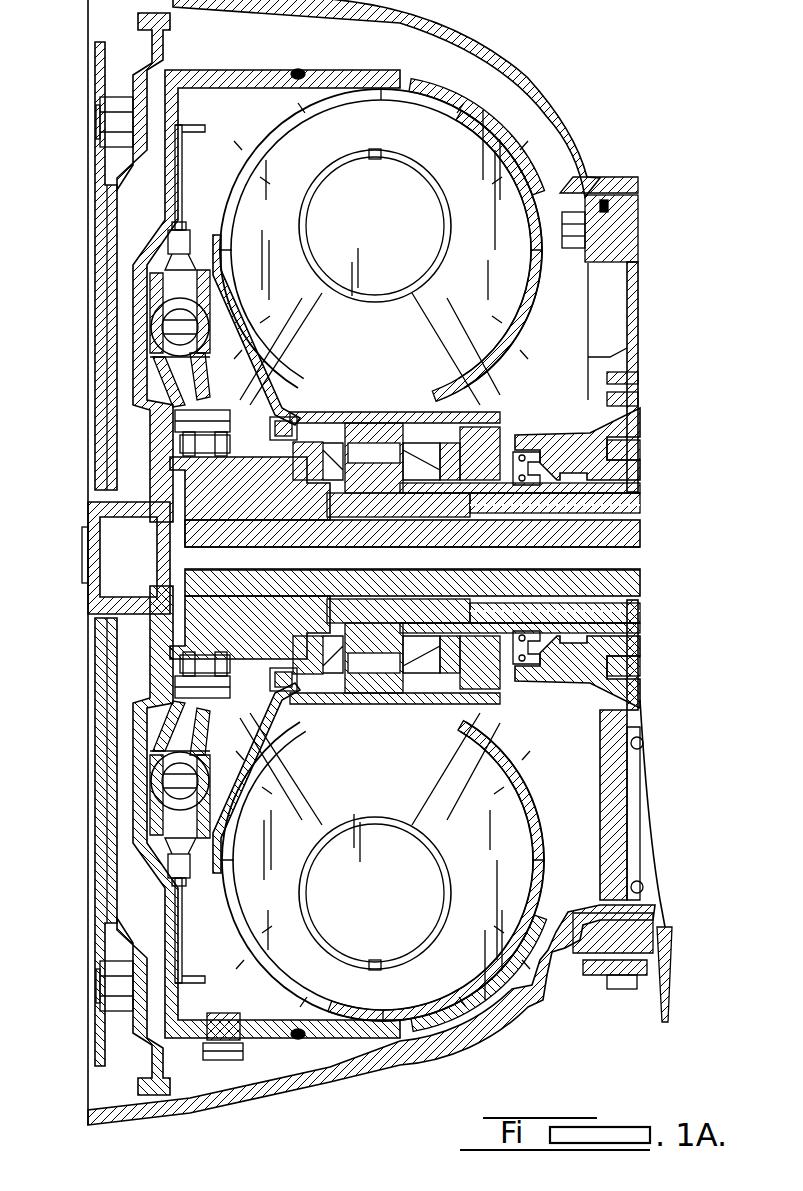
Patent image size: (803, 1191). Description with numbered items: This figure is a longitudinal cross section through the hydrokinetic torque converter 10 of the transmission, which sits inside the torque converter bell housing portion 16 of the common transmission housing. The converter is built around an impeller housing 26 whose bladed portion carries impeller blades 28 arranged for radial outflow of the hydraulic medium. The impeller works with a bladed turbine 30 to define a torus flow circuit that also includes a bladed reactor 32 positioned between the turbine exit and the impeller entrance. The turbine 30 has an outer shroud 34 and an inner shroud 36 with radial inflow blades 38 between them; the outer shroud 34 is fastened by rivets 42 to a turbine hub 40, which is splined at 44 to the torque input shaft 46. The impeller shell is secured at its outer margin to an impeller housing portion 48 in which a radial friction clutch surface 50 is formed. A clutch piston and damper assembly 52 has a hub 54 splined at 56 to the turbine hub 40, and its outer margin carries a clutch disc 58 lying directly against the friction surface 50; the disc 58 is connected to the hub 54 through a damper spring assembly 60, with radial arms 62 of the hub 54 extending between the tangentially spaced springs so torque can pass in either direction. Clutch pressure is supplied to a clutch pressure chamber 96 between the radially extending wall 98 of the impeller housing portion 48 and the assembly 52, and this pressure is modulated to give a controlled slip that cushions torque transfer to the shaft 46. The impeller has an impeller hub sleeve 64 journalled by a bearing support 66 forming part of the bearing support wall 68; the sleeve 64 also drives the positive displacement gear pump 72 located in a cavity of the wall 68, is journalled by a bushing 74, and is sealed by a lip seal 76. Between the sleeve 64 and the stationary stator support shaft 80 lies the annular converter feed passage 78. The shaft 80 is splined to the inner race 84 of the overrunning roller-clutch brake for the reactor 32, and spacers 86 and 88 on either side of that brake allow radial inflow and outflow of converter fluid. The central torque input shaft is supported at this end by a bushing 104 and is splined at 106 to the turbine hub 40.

The hydrokinetic torque converter 10 is at (520, 158).
The torque converter bell housing portion 16 is at (503, 57).
The impeller housing 26 is at (447, 106).
The impeller blades 28 is at (508, 295).
The bladed turbine 30 is at (270, 138).
The bladed reactor 32 is at (408, 339).
The outer shroud 34 is at (238, 310).
The inner shroud 36 is at (306, 218).
The radial inflow blades 38 is at (288, 302).
The turbine hub 40 is at (275, 505).
The rivets 42 is at (273, 418).
The spline 44 is at (277, 590).
The torque input shaft 46 is at (610, 565).
The impeller housing portion 48 is at (228, 78).
The friction clutch surface 50 is at (179, 125).
The clutch piston and damper assembly 52 is at (188, 226).
The hub 54 is at (190, 516).
The spline 56 is at (162, 520).
The clutch disc 58 is at (175, 172).
The damper spring assembly 60 is at (216, 302).
The radial arms 62 is at (150, 302).
The impeller hub sleeve 64 is at (222, 345).
The bearing support 66 is at (560, 436).
The bearing support wall 68 is at (633, 290).
The positive displacement gear pump 72 is at (648, 646).
The bushing 74 is at (605, 467).
The lip seal 76 is at (528, 462).
The annular converter feed passage 78 is at (625, 497).
The stator support shaft 80 is at (492, 510).
The inner race 84 is at (372, 462).
The spacer 86 is at (348, 432).
The spacer 88 is at (430, 438).
The clutch pressure chamber 96 is at (172, 447).
The radially extending wall 98 is at (150, 402).
The bushing 104 is at (406, 512).
The spline 106 is at (250, 510).